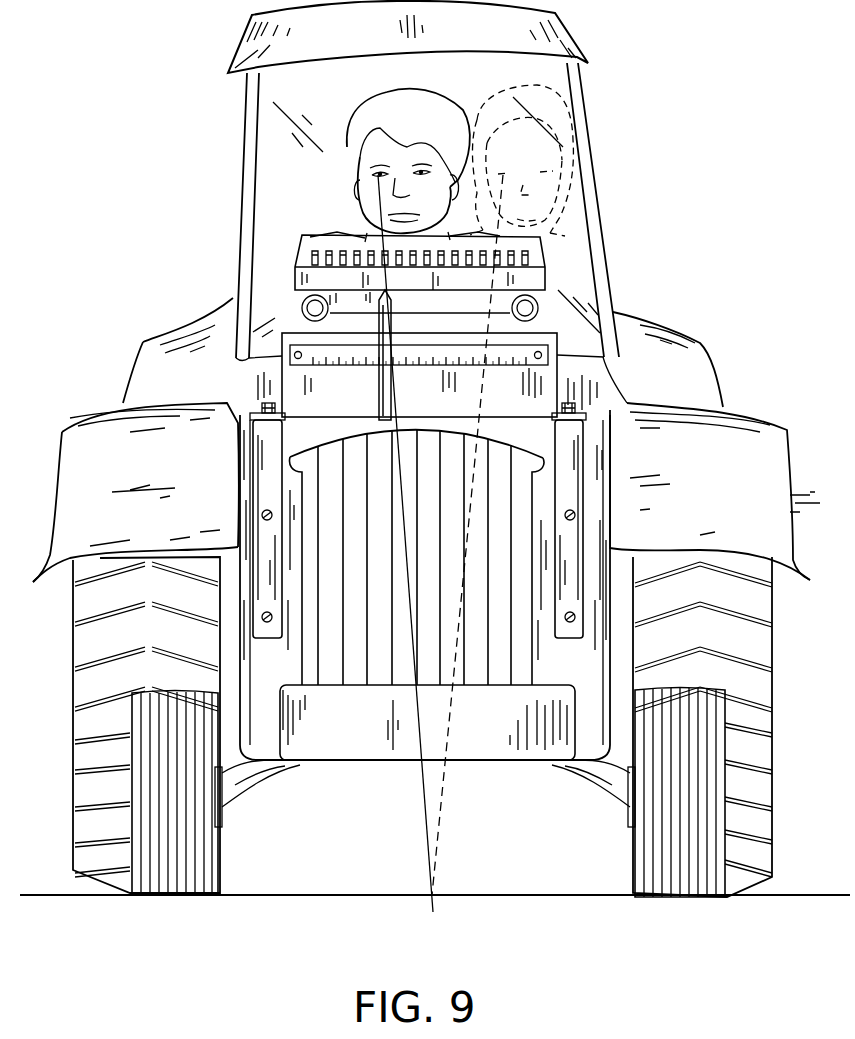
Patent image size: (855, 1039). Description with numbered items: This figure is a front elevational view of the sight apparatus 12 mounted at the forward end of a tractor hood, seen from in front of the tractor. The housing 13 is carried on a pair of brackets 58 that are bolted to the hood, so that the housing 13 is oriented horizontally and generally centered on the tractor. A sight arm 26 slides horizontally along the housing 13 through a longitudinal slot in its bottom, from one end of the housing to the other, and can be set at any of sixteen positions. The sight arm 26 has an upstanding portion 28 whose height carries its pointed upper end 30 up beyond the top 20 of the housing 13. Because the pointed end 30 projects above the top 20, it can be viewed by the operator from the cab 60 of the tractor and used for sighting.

The sight apparatus 12 is at (567, 320).
The housing 13 is at (474, 359).
The top portion 20 is at (272, 306).
The sight arm 26 is at (398, 394).
The upstanding portion 28 is at (380, 380).
The pointed upper end 30 is at (303, 285).
The brackets 58 is at (267, 480).
The cab 60 is at (582, 110).